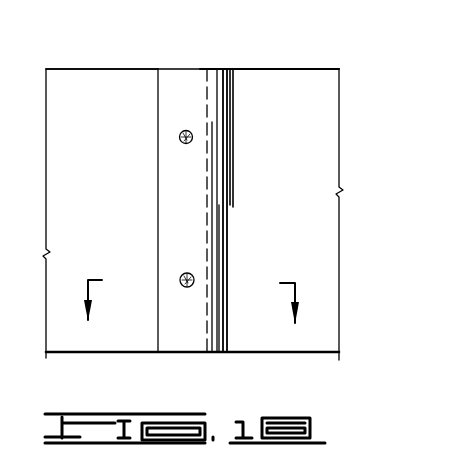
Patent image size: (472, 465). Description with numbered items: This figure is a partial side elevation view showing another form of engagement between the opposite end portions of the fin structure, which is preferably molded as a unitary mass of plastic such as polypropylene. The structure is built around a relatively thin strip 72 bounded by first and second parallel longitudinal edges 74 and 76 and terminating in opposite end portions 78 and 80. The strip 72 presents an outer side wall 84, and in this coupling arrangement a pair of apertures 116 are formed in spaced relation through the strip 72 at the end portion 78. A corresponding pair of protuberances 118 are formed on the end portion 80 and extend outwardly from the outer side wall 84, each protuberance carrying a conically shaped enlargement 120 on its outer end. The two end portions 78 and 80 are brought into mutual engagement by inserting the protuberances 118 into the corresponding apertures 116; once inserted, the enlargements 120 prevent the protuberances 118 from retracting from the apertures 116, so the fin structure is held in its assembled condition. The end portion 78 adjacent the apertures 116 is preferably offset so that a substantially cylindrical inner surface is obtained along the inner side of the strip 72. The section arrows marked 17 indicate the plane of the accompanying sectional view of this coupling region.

The strip 72 is at (320, 88).
The first longitudinal edge 74 is at (241, 352).
The second longitudinal edge 76 is at (314, 70).
The end portion 78 is at (237, 90).
The end portion 80 is at (145, 75).
The outer side wall 84 is at (63, 82).
The apertures 116 is at (178, 135).
The protuberances 118 is at (182, 131).
The conically shaped enlargement 120 is at (181, 141).
The section line 17- 17 is at (193, 302).